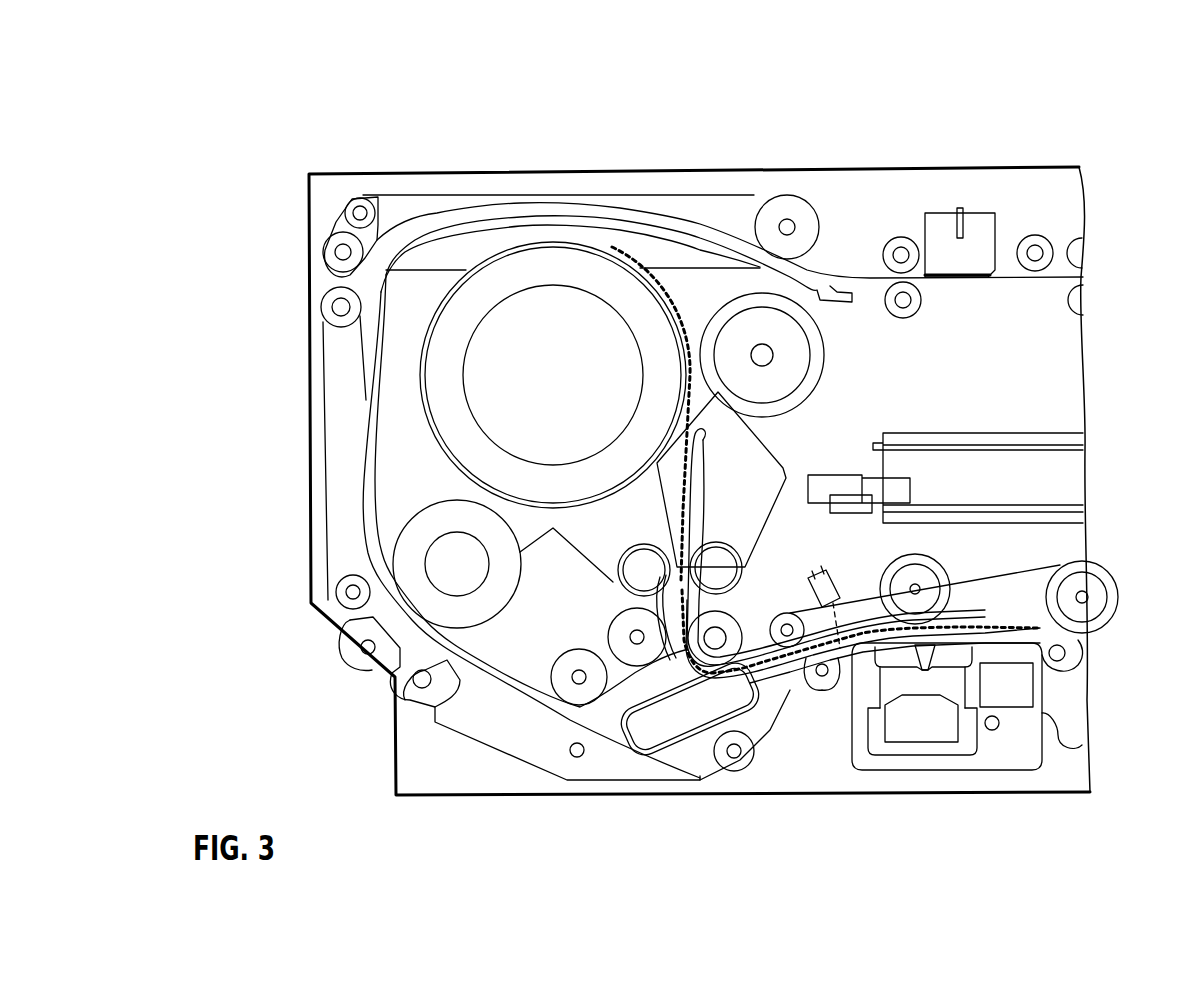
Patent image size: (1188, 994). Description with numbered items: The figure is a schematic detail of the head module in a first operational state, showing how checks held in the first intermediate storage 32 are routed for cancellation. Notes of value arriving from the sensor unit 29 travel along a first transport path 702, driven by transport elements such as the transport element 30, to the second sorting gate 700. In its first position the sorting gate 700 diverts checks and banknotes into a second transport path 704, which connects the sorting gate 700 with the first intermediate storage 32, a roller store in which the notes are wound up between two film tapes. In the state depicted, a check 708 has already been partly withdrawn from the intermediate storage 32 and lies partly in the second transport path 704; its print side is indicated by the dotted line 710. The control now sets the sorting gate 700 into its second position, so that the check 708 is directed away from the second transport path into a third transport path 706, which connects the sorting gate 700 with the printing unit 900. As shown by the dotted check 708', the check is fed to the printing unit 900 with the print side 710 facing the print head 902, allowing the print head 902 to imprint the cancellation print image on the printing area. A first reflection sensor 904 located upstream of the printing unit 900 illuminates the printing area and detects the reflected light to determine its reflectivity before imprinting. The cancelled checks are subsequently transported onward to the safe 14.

The safe 14 is at (286, 153).
The sensor unit 29 is at (1022, 185).
The transport element 30 is at (787, 218).
The first intermediate storage 32 is at (523, 320).
The second sorting gate 700 is at (663, 715).
The first transport path 702 is at (443, 653).
The second transport path 704 is at (675, 515).
The third transport path 706 is at (775, 672).
The check 708 is at (745, 430).
The check (dotted) 708' is at (981, 533).
The print side 710 is at (672, 468).
The printing unit 900 is at (933, 775).
The print head 902 is at (923, 662).
The first reflection sensor 904 is at (828, 584).